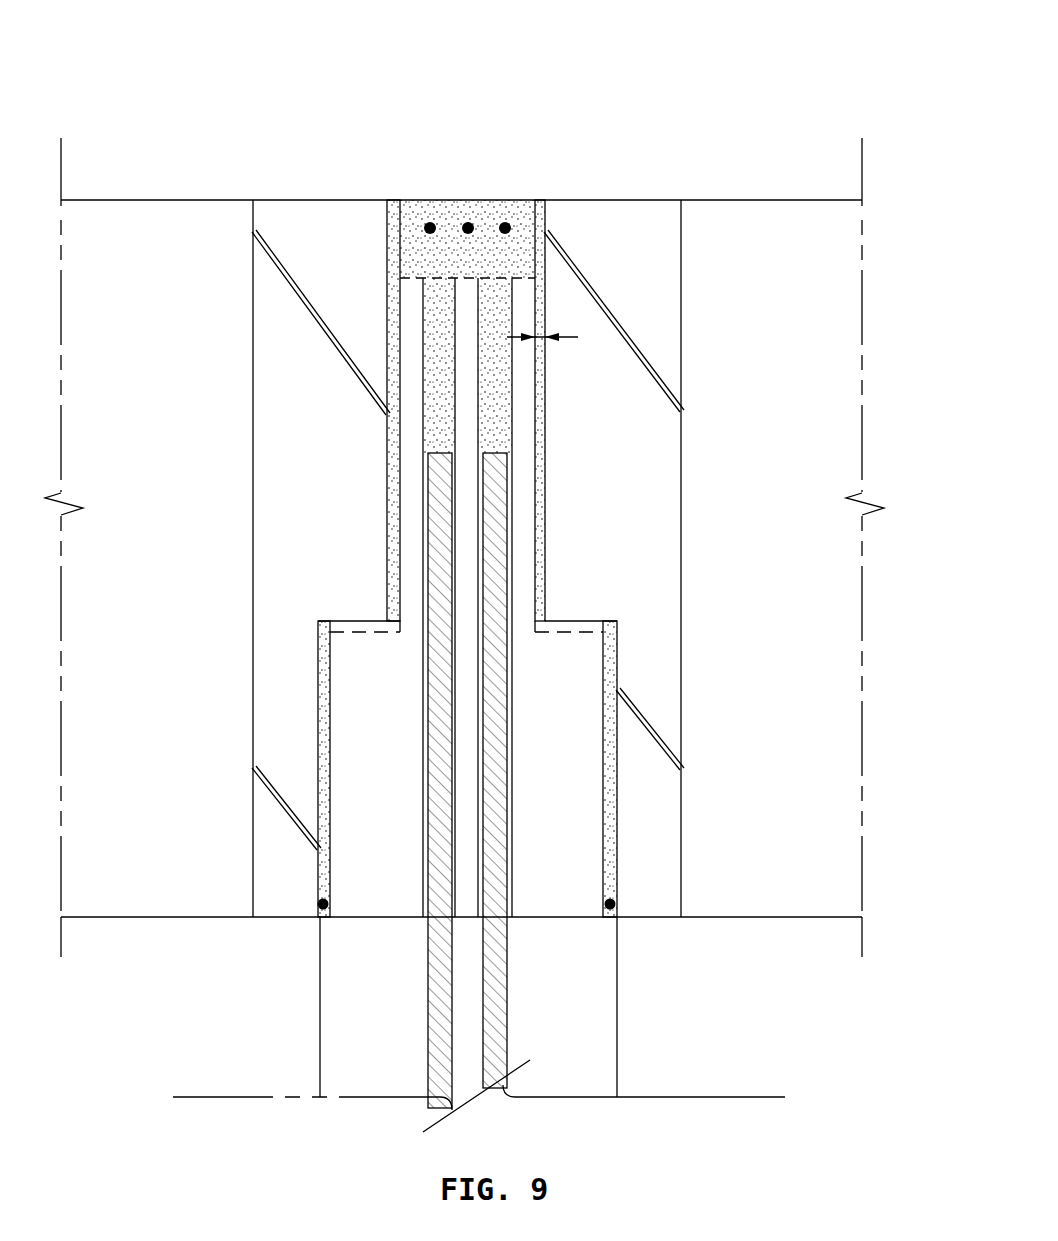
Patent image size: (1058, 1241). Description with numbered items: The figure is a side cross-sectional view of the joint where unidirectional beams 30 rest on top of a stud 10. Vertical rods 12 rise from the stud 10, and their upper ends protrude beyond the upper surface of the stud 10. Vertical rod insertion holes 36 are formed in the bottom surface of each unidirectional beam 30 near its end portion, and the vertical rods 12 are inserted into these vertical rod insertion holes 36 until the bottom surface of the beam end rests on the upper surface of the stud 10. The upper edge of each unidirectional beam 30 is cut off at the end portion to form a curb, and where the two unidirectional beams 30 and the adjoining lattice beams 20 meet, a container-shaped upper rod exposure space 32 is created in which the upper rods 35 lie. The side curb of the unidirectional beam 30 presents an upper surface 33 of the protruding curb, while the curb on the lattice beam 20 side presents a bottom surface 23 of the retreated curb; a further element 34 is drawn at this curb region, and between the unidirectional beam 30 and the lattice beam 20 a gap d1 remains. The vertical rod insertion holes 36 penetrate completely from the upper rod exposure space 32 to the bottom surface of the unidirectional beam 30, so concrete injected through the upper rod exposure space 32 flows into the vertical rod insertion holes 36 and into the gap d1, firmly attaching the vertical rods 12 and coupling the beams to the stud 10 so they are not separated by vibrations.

The stud 10 is at (628, 1046).
The vertical rod 12 is at (497, 562).
The lattice beam 20 is at (157, 196).
The bottom surface of retreated curb 23 is at (585, 621).
The unidirectional beam 30 is at (504, 196).
The upper rod exposure space 32 is at (413, 277).
The upper surface of protruding curb 33 is at (562, 621).
The inner plate 34 is at (578, 633).
The upper rod 35 is at (468, 224).
The vertical rod insertion hole 36 is at (538, 400).
The gap between unidirectional beam and lattice beam d1 is at (545, 333).